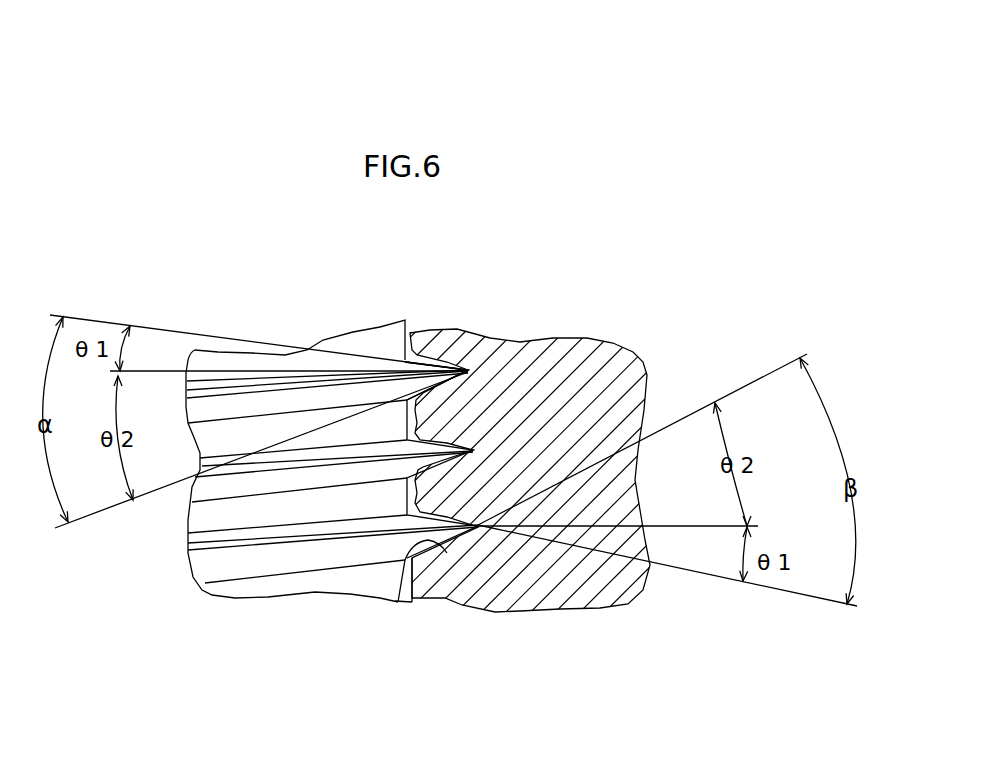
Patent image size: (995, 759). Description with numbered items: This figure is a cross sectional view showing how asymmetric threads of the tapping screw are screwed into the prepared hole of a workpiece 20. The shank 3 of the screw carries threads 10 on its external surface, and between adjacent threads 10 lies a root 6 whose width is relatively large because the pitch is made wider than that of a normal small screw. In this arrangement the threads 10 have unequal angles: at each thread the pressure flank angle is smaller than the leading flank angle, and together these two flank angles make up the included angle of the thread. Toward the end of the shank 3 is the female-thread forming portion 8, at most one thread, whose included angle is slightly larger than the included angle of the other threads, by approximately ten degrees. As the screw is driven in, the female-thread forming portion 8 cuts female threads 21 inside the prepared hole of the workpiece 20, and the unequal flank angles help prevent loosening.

The shank 3 is at (240, 512).
The root 6 is at (297, 423).
The female-thread forming portion 8 is at (140, 510).
The threads 10 is at (477, 370).
The workpiece 20 is at (598, 355).
The female threads 21 is at (410, 548).